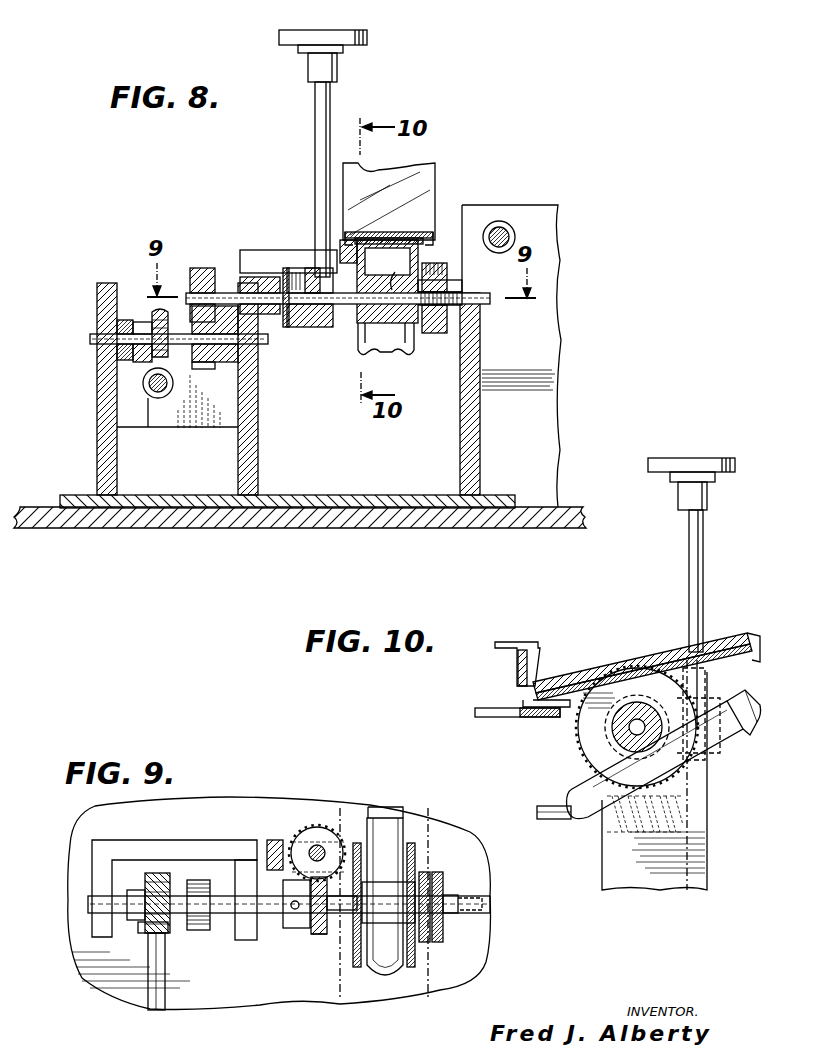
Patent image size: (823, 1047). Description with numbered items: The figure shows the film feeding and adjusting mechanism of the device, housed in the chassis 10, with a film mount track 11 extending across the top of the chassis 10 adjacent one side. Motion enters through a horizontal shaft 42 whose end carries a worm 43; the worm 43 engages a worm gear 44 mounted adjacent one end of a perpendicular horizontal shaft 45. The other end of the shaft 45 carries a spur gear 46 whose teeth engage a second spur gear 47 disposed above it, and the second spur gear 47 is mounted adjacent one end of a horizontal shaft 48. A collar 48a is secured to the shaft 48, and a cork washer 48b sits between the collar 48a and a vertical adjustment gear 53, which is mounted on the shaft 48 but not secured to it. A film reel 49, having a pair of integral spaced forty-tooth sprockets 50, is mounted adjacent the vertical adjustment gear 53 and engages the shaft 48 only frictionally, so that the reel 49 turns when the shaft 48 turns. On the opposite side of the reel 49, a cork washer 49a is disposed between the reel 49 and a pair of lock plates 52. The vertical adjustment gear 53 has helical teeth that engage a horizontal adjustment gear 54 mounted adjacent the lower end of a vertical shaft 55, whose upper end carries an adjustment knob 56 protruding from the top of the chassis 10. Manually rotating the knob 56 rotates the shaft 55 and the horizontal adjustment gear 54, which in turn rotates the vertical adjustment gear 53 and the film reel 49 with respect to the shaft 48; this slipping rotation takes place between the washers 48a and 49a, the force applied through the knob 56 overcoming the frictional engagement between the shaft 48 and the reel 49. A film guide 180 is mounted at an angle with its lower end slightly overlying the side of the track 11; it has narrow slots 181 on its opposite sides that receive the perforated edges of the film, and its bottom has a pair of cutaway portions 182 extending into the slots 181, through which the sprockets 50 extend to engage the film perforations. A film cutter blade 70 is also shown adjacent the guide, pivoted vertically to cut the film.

In FIG. 8, the chassis 10 is at (575, 509).
In FIG. 9, the chassis 10 is at (82, 837).
In FIG. 10, the film mount track 11 is at (488, 707).
In FIG. 8, the horizontal shaft 42 is at (148, 427).
In FIG. 10, the horizontal shaft 42 is at (556, 819).
In FIG. 9, the horizontal shaft 42 is at (165, 991).
In FIG. 8, the worm 43 is at (143, 378).
In FIG. 10, the worm 43 is at (625, 833).
In FIG. 9, the worm 43 is at (140, 934).
In FIG. 8, the worm gear 44 is at (155, 310).
In FIG. 9, the worm gear 44 is at (157, 873).
In FIG. 8, the perpendicular horizontal shaft 45 is at (90, 337).
In FIG. 9, the perpendicular horizontal shaft 45 is at (88, 904).
In FIG. 8, the spur gear 46 is at (200, 364).
In FIG. 8, the second spur gear 47 is at (205, 268).
In FIG. 9, the second spur gear 47 is at (195, 930).
In FIG. 8, the horizontal shaft 48 is at (205, 268).
In FIG. 10, the horizontal shaft 48 is at (600, 748).
In FIG. 9, the horizontal shaft 48 is at (283, 920).
In FIG. 8, the collar 48a is at (297, 325).
In FIG. 9, the collar 48a is at (320, 938).
In FIG. 8, the cork washer 48b is at (318, 330).
In FIG. 9, the cork washer 48b is at (316, 935).
In FIG. 8, the film reel 49 is at (387, 281).
In FIG. 10, the film reel 49 is at (590, 733).
In FIG. 9, the film reel 49 is at (388, 902).
In FIG. 8, the cork washer 49a is at (420, 282).
In FIG. 9, the cork washer 49a is at (418, 875).
In FIG. 8, the sprockets 50 is at (380, 355).
In FIG. 10, the sprockets 50 is at (698, 682).
In FIG. 9, the sprockets 50 is at (411, 968).
In FIG. 8, the lock plates 52 is at (436, 333).
In FIG. 9, the lock plates 52 is at (428, 947).
In FIG. 8, the vertical adjustment gear 53 is at (315, 322).
In FIG. 9, the vertical adjustment gear 53 is at (357, 968).
In FIG. 10, the horizontal adjustment gear 54 is at (713, 757).
In FIG. 9, the horizontal adjustment gear 54 is at (292, 830).
In FIG. 8, the vertical shaft 55 is at (330, 96).
In FIG. 10, the vertical shaft 55 is at (689, 562).
In FIG. 9, the vertical shaft 55 is at (317, 845).
In FIG. 8, the adjustment knob 56 is at (360, 30).
In FIG. 10, the adjustment knob 56 is at (675, 458).
In FIG. 10, the film cutter blade 70 is at (540, 660).
In FIG. 8, the film guide 180 is at (430, 170).
In FIG. 10, the film guide 180 is at (635, 652).
In FIG. 8, the narrow slots 181 is at (345, 230).
In FIG. 8, the cutaway portions 182 is at (410, 215).